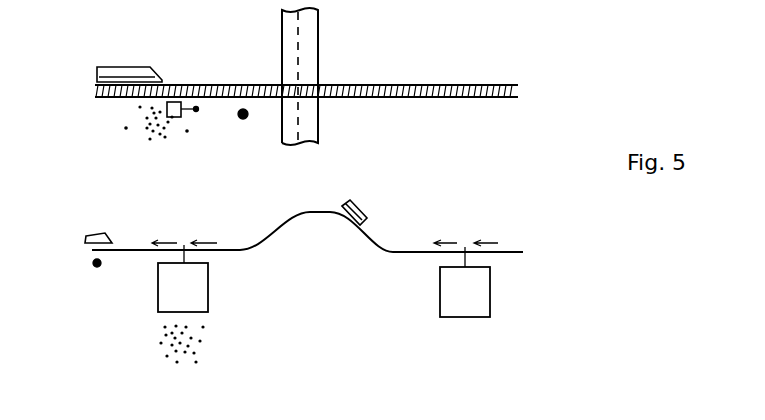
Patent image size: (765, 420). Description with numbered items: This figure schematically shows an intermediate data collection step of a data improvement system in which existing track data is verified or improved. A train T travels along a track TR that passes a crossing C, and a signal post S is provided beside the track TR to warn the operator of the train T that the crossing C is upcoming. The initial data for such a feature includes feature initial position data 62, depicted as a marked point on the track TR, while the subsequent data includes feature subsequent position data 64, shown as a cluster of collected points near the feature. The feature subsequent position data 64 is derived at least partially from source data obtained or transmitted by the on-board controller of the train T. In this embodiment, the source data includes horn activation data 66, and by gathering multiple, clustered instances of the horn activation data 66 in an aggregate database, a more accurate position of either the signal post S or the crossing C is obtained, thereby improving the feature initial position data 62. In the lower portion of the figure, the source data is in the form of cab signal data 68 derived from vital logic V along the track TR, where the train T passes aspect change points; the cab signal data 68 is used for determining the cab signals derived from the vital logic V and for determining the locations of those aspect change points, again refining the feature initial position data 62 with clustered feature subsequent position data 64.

The train T is at (118, 66).
The signal post S is at (174, 101).
The feature initial position data 62 is at (243, 108).
The crossing C is at (318, 57).
The track TR is at (410, 83).
The feature subsequent position data 64 is at (128, 138).
The horn activation data 66 is at (171, 148).
The vital logic V is at (208, 290).
The cab signal data 68 is at (220, 349).